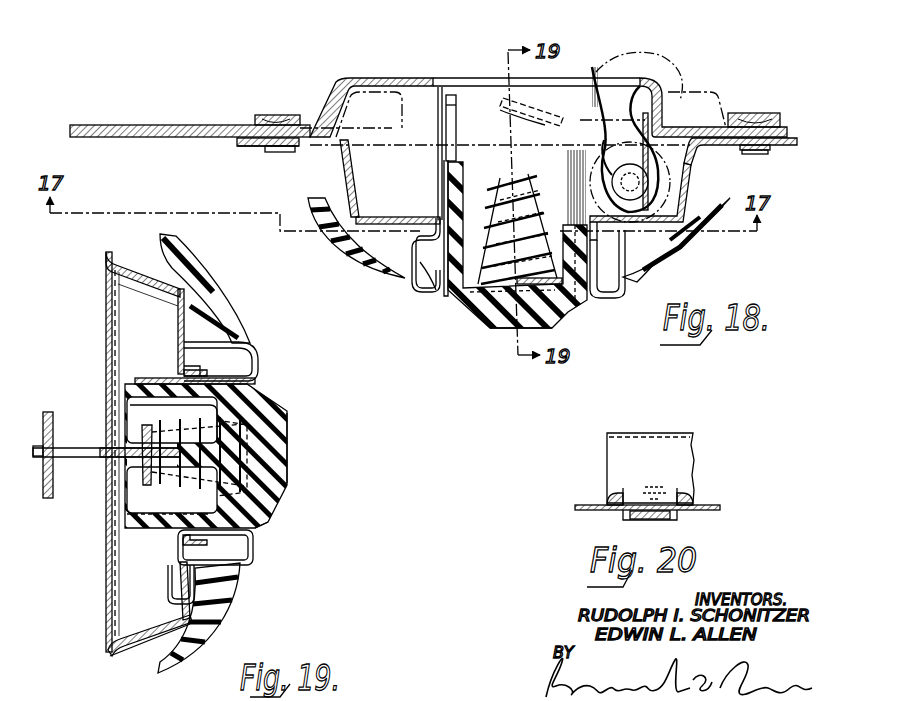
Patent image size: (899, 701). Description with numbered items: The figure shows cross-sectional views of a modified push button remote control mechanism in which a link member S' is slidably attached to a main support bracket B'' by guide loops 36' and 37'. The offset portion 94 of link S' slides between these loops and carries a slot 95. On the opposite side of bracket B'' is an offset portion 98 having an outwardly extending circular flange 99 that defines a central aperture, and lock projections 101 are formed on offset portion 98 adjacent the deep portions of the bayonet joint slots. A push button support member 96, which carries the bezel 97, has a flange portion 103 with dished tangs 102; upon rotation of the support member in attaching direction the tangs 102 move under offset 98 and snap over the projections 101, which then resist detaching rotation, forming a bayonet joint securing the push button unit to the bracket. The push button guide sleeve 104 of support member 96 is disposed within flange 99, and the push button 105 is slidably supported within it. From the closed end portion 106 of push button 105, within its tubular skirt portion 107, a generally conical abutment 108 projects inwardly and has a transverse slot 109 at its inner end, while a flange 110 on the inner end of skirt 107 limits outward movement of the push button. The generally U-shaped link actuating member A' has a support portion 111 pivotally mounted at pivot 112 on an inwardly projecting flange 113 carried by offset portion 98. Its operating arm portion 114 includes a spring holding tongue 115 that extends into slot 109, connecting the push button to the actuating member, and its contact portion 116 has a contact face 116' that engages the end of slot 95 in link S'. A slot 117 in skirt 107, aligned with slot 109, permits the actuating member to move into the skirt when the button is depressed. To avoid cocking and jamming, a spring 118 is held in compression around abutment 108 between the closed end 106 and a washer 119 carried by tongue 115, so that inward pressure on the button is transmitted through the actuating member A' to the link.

In FIG. 18, the link member S' is at (190, 113).
In FIG. 18, the guide loop 36' is at (268, 116).
In FIG. 18, the guide loop 37' is at (764, 117).
In FIG. 18, the link actuating member A' is at (646, 131).
In FIG. 18, the bracket B'' is at (246, 164).
In FIG. 19, the bracket B'' is at (120, 640).
In FIG. 18, the offset portion of link 94 is at (357, 80).
In FIG. 19, the offset portion of link 94 is at (43, 412).
In FIG. 18, the slot 95 is at (479, 78).
In FIG. 19, the slot 95 is at (55, 462).
In FIG. 18, the push button support member 96 is at (421, 297).
In FIG. 19, the push button support member 96 is at (259, 358).
In FIG. 20, the push button support member 96 is at (699, 463).
In FIG. 18, the bezel 97 is at (374, 253).
In FIG. 19, the bezel 97 is at (207, 278).
In FIG. 18, the offset portion of bracket 98 is at (440, 220).
In FIG. 19, the offset portion of bracket 98 is at (178, 317).
In FIG. 20, the offset portion of bracket 98 is at (706, 506).
In FIG. 18, the circular flange 99 is at (605, 240).
In FIG. 19, the circular flange 99 is at (197, 373).
In FIG. 20, the lock projection 101 is at (678, 517).
In FIG. 19, the tang 102 is at (170, 594).
In FIG. 20, the tang 102 is at (630, 520).
In FIG. 18, the flange portion 103 is at (348, 247).
In FIG. 19, the flange portion 103 is at (200, 614).
In FIG. 20, the flange portion 103 is at (611, 497).
In FIG. 18, the push button guide sleeve 104 is at (470, 300).
In FIG. 19, the push button guide sleeve 104 is at (228, 548).
In FIG. 18, the push button 105 is at (573, 322).
In FIG. 19, the push button 105 is at (285, 410).
In FIG. 18, the closed end portion 106 is at (487, 316).
In FIG. 19, the closed end portion 106 is at (279, 492).
In FIG. 18, the tubular skirt portion 107 is at (447, 197).
In FIG. 19, the tubular skirt portion 107 is at (192, 395).
In FIG. 18, the conical abutment 108 is at (422, 283).
In FIG. 19, the conical abutment 108 is at (270, 515).
In FIG. 19, the transverse slot 109 is at (167, 477).
In FIG. 18, the flange 110 is at (439, 87).
In FIG. 19, the flange 110 is at (133, 378).
In FIG. 18, the support portion 111 is at (630, 132).
In FIG. 18, the pivot 112 is at (648, 180).
In FIG. 18, the inwardly projecting flange 113 is at (663, 200).
In FIG. 18, the operating arm portion 114 is at (518, 112).
In FIG. 18, the spring holding tongue 115 is at (510, 178).
In FIG. 18, the contact portion 116 is at (595, 99).
In FIG. 19, the contact portion 116 is at (38, 486).
In FIG. 18, the contact face 116' is at (639, 65).
In FIG. 18, the slot 117 is at (628, 248).
In FIG. 18, the spring 118 is at (583, 307).
In FIG. 19, the spring 118 is at (167, 530).
In FIG. 18, the washer 119 is at (447, 170).
In FIG. 19, the washer 119 is at (143, 427).